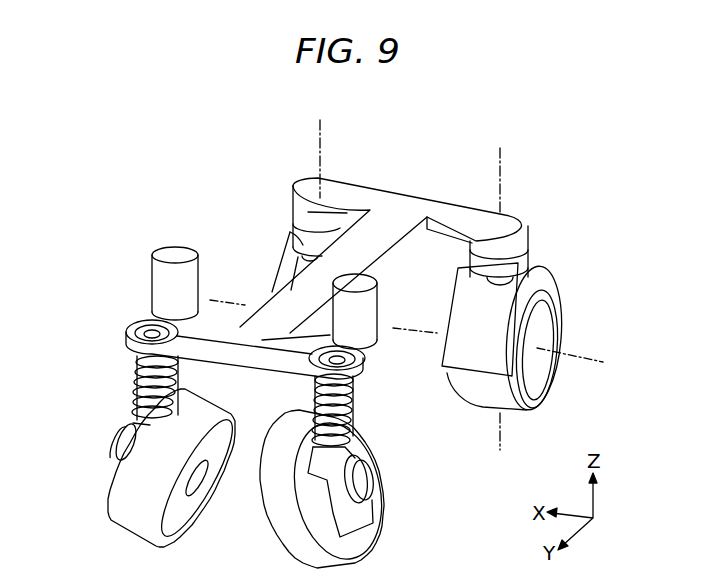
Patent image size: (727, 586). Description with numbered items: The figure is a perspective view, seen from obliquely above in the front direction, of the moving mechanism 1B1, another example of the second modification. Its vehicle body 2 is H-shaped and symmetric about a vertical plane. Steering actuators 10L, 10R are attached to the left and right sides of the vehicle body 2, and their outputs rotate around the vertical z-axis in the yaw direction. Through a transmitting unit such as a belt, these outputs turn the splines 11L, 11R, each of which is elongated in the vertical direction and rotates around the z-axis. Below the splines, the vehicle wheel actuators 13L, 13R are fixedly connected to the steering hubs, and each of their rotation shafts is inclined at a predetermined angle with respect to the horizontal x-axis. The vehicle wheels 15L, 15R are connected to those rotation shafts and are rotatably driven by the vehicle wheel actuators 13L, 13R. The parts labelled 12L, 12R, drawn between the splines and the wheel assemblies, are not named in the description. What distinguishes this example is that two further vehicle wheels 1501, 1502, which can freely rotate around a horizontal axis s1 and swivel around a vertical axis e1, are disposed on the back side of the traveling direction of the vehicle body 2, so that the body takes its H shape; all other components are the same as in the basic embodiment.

The moving mechanism 1B1 is at (193, 184).
The vehicle body 2 is at (405, 192).
The vertical axis e1 is at (319, 158).
The horizontal axis s1 is at (243, 303).
The vehicle wheel 1501 is at (288, 258).
The vehicle wheel 1502 is at (541, 370).
The steering actuator 10R is at (152, 281).
The steering actuator 10L is at (364, 313).
The spline 11R is at (150, 334).
The spline 11L is at (363, 358).
The right spring 12R is at (138, 396).
The left spring 12L is at (352, 421).
The vehicle wheel actuator 13R is at (118, 443).
The vehicle wheel actuator 13L is at (365, 480).
The vehicle wheel 15R is at (179, 506).
The vehicle wheel 15L is at (373, 535).